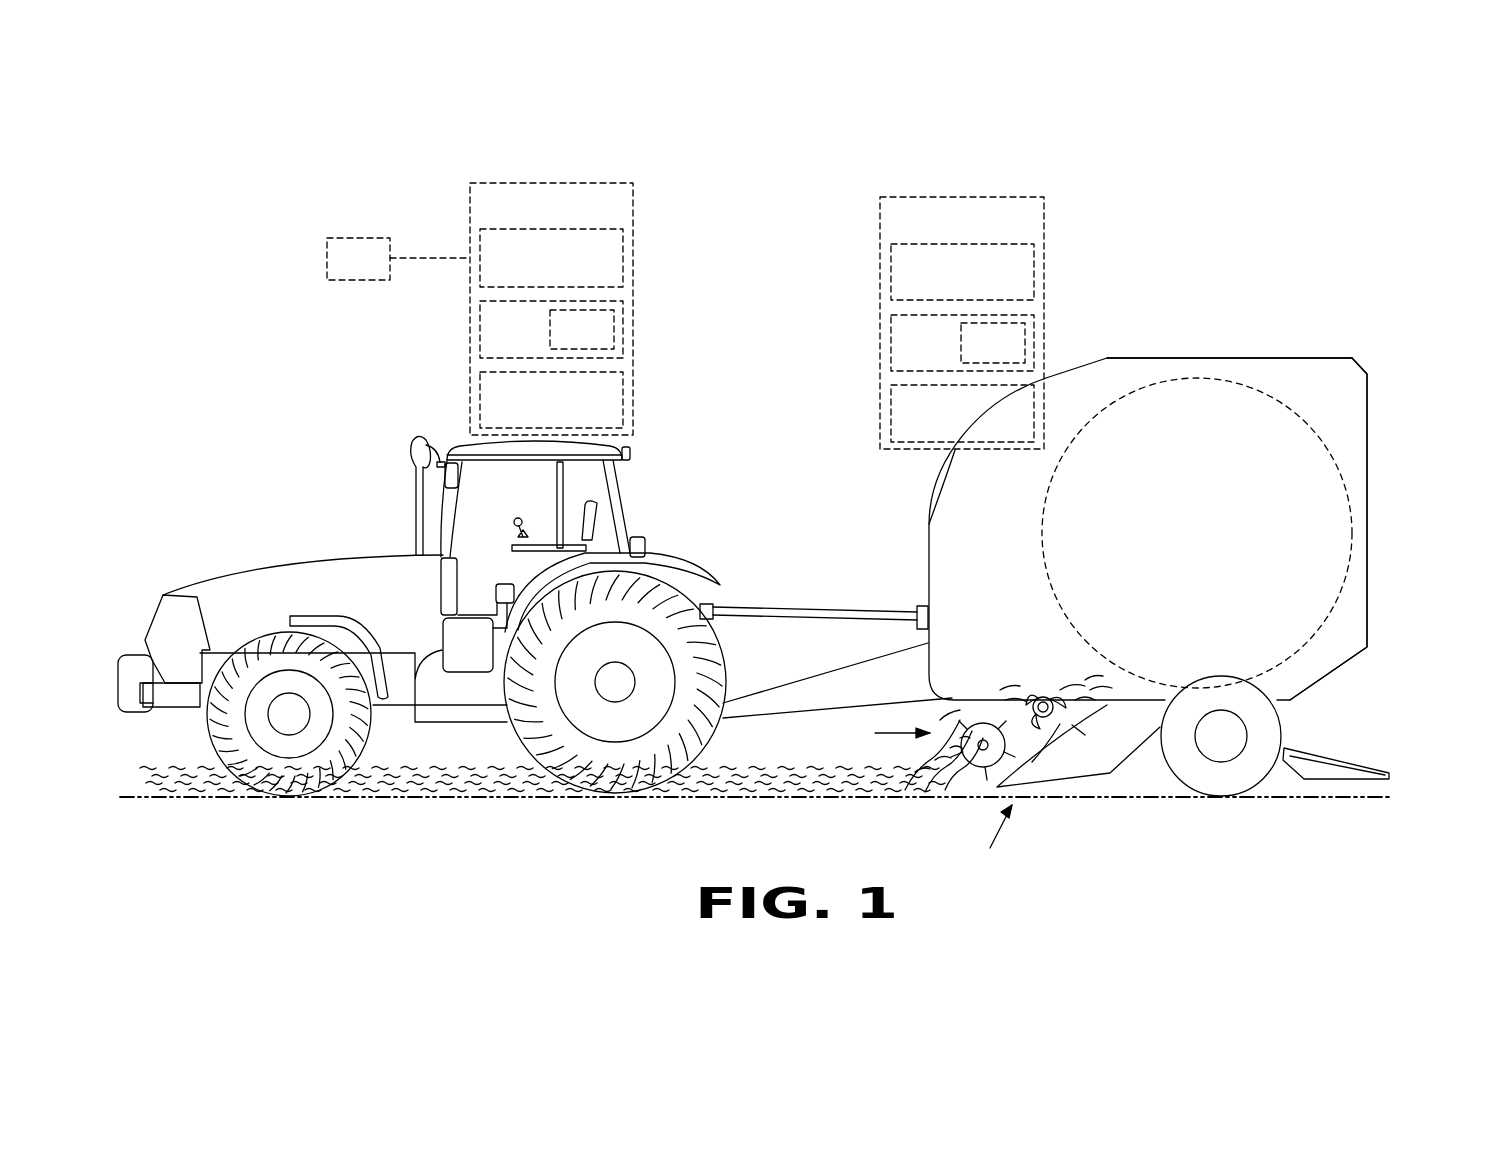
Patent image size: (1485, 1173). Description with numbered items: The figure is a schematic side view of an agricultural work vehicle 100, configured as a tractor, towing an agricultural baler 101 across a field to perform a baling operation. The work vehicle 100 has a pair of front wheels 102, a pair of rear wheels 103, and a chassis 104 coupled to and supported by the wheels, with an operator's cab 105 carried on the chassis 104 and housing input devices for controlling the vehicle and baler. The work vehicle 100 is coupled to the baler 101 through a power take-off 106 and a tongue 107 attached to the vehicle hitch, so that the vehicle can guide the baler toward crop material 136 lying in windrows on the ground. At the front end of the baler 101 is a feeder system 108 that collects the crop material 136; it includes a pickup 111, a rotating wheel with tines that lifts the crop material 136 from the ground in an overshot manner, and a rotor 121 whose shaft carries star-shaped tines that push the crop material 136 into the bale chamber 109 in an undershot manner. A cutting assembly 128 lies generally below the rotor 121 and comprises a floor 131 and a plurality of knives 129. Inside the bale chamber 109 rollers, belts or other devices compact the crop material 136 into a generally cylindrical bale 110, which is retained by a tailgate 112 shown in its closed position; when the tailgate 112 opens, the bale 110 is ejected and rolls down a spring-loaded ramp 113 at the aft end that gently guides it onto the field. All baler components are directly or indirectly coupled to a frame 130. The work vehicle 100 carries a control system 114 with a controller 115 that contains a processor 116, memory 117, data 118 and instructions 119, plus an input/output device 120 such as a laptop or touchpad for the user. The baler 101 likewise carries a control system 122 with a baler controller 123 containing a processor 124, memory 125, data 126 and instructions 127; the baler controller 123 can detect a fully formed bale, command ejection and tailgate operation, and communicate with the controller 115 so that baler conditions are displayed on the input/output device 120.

The work vehicle 100 is at (456, 616).
The agricultural baler 101 is at (1131, 553).
The front wheels 102 is at (210, 728).
The rear wheels 103 is at (710, 730).
The chassis 104 is at (438, 722).
The operator's cab 105 is at (493, 470).
The power take-off 106 is at (770, 607).
The tongue 107 is at (800, 680).
The feeder system 108 is at (880, 734).
The bale chamber 109 is at (1245, 362).
The bale 110 is at (1330, 452).
The pickup 111 is at (977, 755).
The tailgate 112 is at (1355, 357).
The ramp 113 is at (1361, 763).
The control system 114 is at (540, 282).
The controller 115 is at (561, 219).
The processor 116 is at (536, 277).
The memory 117 is at (531, 344).
The data 118 is at (599, 344).
The instructions 119 is at (536, 414).
The input/output device 120 is at (379, 272).
The rotor 121 is at (1033, 690).
The control system 122 is at (896, 323).
The baler controller 123 is at (973, 232).
The processor 124 is at (949, 291).
The memory 125 is at (941, 357).
The data 126 is at (1011, 357).
The instructions 127 is at (949, 427).
The cutting assembly 128 is at (987, 843).
The knives 129 is at (1058, 742).
The frame 130 is at (1127, 702).
The floor 131 is at (1072, 725).
The crop material 136 is at (415, 787).